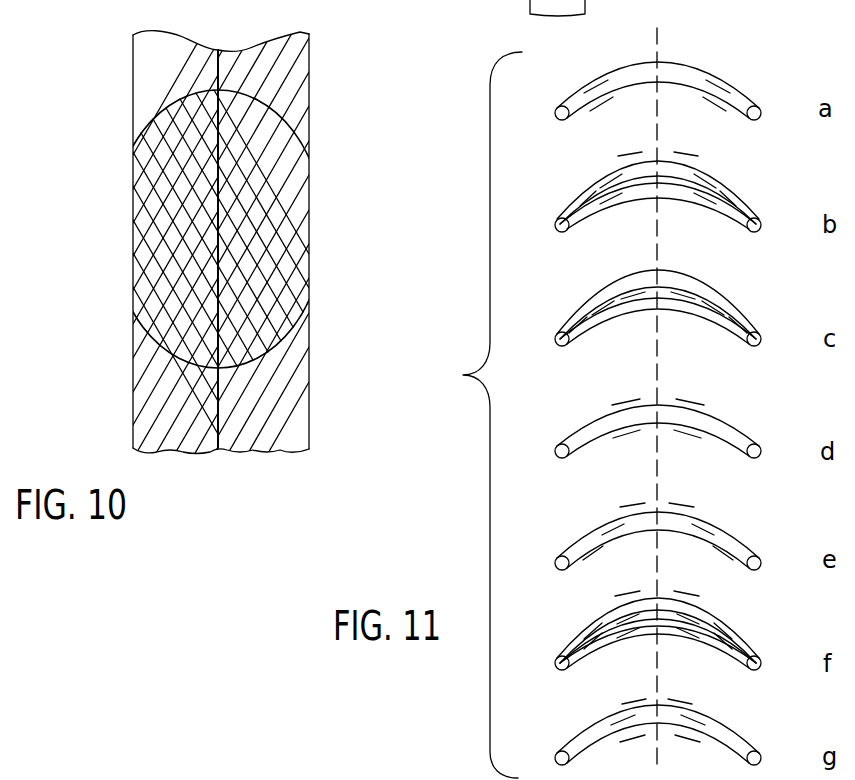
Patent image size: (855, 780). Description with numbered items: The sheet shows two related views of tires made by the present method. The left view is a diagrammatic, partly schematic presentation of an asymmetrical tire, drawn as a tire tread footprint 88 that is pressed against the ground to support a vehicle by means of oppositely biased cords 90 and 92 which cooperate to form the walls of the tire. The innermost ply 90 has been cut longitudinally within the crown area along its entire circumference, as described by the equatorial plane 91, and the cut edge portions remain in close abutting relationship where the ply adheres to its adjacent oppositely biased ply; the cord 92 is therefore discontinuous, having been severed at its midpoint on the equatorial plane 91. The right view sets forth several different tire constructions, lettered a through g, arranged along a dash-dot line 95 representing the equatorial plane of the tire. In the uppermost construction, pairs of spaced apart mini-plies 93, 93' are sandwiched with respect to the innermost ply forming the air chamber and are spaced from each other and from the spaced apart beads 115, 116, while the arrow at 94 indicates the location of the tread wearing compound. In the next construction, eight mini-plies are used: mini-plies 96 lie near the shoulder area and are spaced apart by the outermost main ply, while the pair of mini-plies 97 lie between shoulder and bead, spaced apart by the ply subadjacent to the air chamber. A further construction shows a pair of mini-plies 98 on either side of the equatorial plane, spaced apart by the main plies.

In FIG. 10, the tire tread footprint 88 is at (304, 138).
In FIG. 10, the innermost ply 90 is at (303, 75).
In FIG. 10, the equatorial plane 91 is at (217, 432).
In FIG. 10, the cord 92 is at (135, 147).
In FIG. 11, the tread wearing compound 94 is at (696, 62).
In FIG. 11, the bead 115 is at (557, 107).
In FIG. 11, the bead 116 is at (760, 110).
In FIG. 11, the mini-ply 93 is at (727, 123).
In FIG. 11, the mini-ply 93' is at (620, 123).
In FIG. 11, the mini-plies 96 is at (697, 156).
In FIG. 11, the mini-plies 97 is at (714, 217).
In FIG. 11, the equatorial plane 95 is at (660, 363).
In FIG. 11, the mini-plies 98 is at (671, 436).